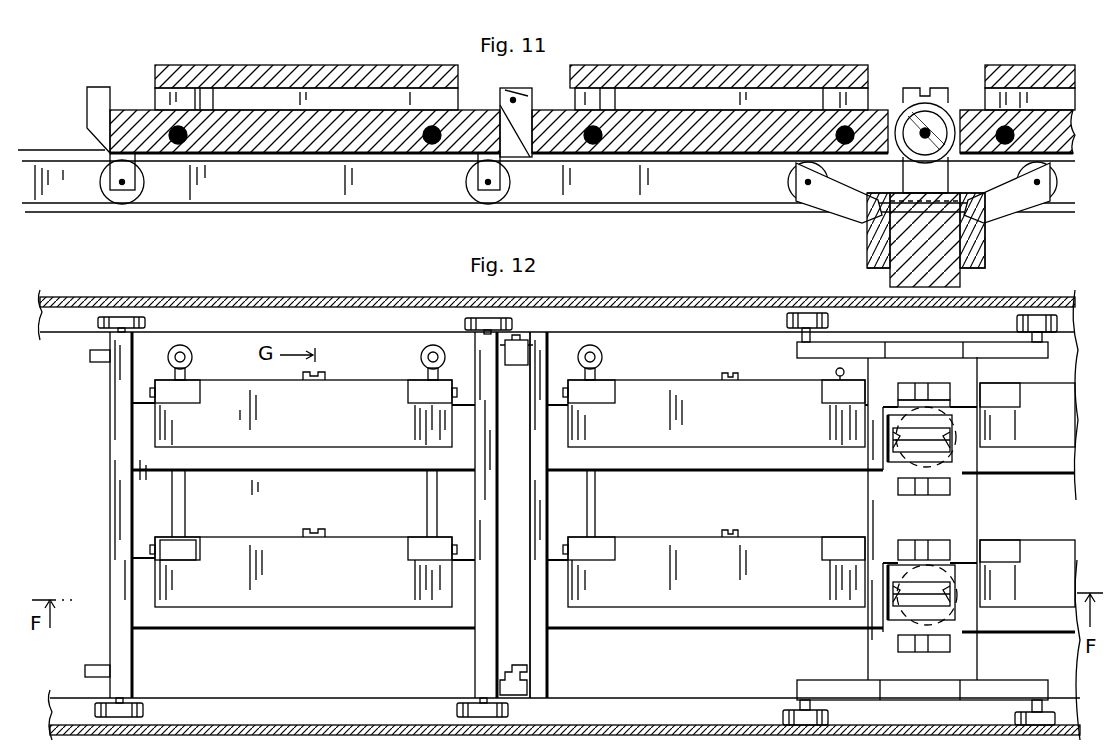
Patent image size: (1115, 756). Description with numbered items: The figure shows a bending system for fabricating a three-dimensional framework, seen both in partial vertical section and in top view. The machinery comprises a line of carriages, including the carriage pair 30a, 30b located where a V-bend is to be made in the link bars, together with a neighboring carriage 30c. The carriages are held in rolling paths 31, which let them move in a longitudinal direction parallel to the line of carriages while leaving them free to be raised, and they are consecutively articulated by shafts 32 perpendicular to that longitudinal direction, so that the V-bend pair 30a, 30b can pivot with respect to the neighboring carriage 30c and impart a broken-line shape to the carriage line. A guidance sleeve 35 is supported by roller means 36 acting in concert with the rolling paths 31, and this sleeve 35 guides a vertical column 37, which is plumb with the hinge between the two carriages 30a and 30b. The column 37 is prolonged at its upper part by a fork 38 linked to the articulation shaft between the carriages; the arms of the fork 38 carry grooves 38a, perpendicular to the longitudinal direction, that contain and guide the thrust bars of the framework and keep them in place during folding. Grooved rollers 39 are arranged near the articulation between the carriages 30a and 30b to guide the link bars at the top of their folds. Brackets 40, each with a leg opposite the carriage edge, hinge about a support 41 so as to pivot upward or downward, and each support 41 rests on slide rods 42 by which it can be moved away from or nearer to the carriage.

In FIG. 11, the carriage 30a is at (740, 140).
In FIG. 12, the carriage 30a is at (752, 625).
In FIG. 11, the carriage 30b is at (1035, 140).
In FIG. 11, the carriage 30c is at (306, 150).
In FIG. 12, the carriage 30c is at (362, 625).
In FIG. 11, the rolling paths 31 is at (395, 195).
In FIG. 12, the rolling paths 31 is at (225, 710).
In FIG. 11, the shafts 32 is at (512, 98).
In FIG. 12, the shafts 32 is at (505, 672).
In FIG. 11, the guidance sleeve 35 is at (985, 264).
In FIG. 12, the roller means 36 is at (835, 710).
In FIG. 11, the vertical column 37 is at (890, 268).
In FIG. 11, the fork 38 is at (905, 102).
In FIG. 12, the fork 38 is at (938, 383).
In FIG. 11, the grooves 38a is at (926, 88).
In FIG. 12, the grooves 38a is at (920, 383).
In FIG. 11, the grooved rollers 39 is at (940, 120).
In FIG. 12, the grooved rollers 39 is at (937, 440).
In FIG. 11, the brackets 40 is at (338, 76).
In FIG. 12, the brackets 40 is at (392, 395).
In FIG. 12, the support 41 is at (163, 540).
In FIG. 12, the slide rods 42 is at (187, 510).